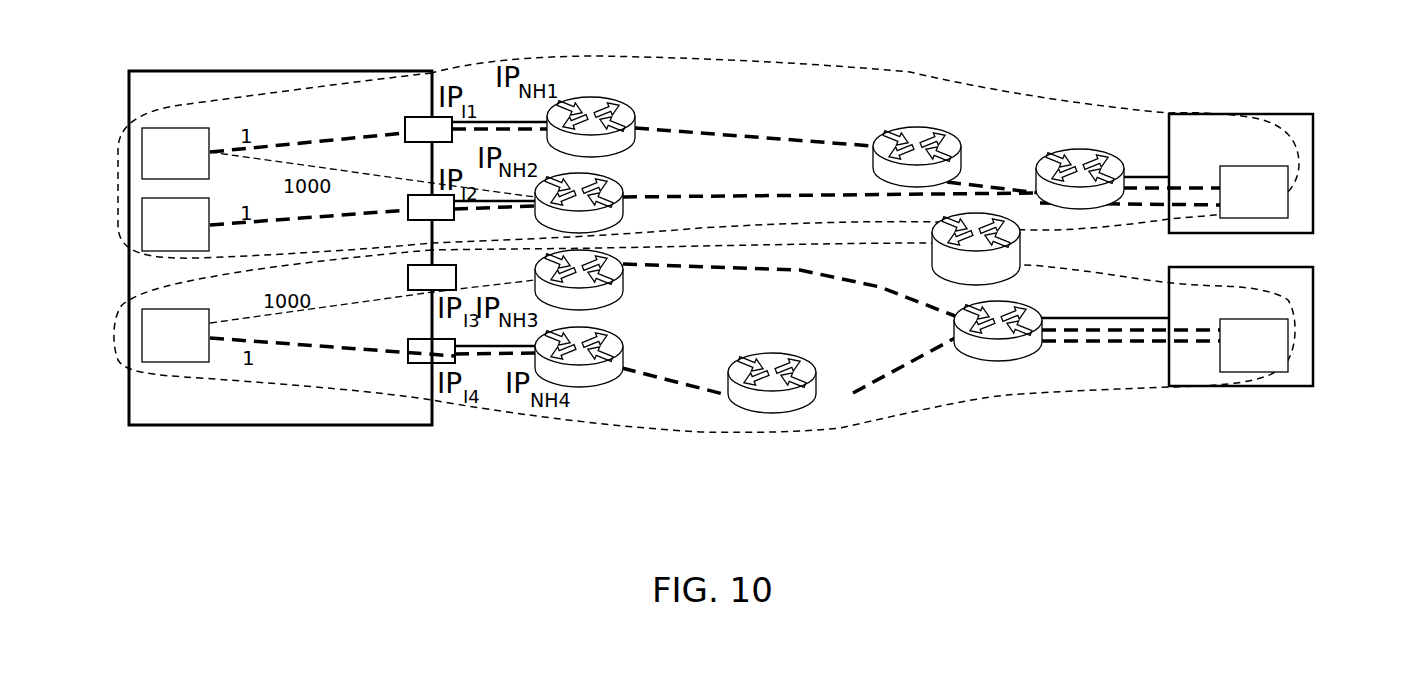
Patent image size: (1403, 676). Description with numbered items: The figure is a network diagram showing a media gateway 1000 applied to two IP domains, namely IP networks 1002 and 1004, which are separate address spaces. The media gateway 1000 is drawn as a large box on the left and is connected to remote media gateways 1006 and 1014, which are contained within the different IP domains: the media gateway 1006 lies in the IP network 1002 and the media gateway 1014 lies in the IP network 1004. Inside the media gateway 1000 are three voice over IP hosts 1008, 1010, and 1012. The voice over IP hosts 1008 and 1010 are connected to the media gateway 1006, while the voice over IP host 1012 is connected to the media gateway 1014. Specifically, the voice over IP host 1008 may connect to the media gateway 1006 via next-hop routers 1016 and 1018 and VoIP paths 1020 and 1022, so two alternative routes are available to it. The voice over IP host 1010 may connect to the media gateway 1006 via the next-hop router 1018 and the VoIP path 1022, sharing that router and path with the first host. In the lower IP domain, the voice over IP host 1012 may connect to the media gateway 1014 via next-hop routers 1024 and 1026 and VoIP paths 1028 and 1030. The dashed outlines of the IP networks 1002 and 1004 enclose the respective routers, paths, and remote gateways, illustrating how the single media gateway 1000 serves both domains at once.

The media gateway 1000 is at (263, 70).
The IP network 1002 is at (752, 63).
The IP network 1004 is at (968, 402).
The media gateway 1006 is at (1315, 135).
The voice over IP host 1008 is at (140, 137).
The voice over IP host 1010 is at (140, 208).
The voice over IP host 1012 is at (140, 318).
The media gateway 1014 is at (1315, 290).
The next-hop router 1016 is at (635, 112).
The next-hop router 1018 is at (617, 182).
The VoIP path 1020 is at (800, 138).
The VoIP path 1022 is at (753, 197).
The next-hop router 1024 is at (623, 287).
The next-hop router 1026 is at (623, 347).
The VoIP path 1028 is at (792, 272).
The VoIP path 1030 is at (887, 378).